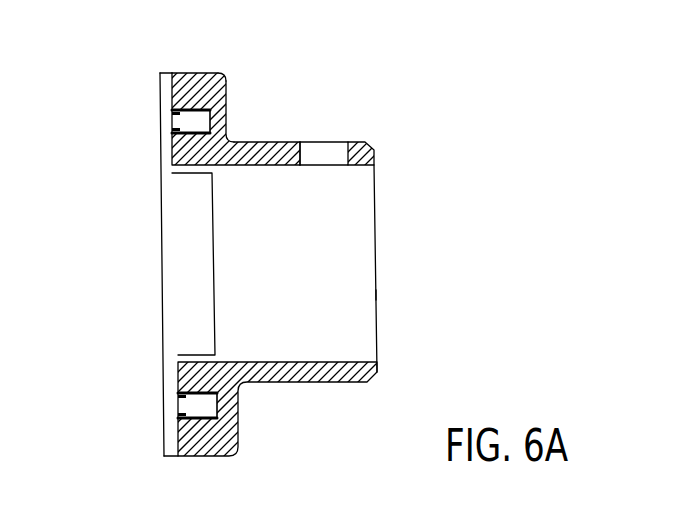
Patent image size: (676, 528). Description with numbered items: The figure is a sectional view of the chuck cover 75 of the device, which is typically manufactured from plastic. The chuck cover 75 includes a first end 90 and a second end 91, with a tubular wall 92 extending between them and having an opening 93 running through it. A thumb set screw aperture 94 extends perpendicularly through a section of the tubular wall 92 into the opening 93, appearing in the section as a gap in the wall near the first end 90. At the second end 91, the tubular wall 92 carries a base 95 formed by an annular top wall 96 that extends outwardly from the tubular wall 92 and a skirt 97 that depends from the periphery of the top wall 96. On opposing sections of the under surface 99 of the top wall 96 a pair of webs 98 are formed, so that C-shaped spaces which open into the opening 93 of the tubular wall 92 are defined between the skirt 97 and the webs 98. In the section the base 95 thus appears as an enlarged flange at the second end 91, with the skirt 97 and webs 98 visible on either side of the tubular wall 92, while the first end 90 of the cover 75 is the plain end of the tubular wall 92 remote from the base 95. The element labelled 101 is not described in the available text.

The chuck cover 75 is at (367, 143).
The first end 90 is at (392, 243).
The second end 91 is at (150, 270).
The tubular wall 92 is at (278, 143).
The opening 93 is at (357, 292).
The thumb set screw aperture 94 is at (335, 143).
The base 95 is at (218, 72).
The annular top wall 96 is at (228, 115).
The skirt 97 is at (193, 72).
The webs 98 is at (175, 157).
The under surface 99 is at (212, 208).
The seal groove 101 is at (175, 122).